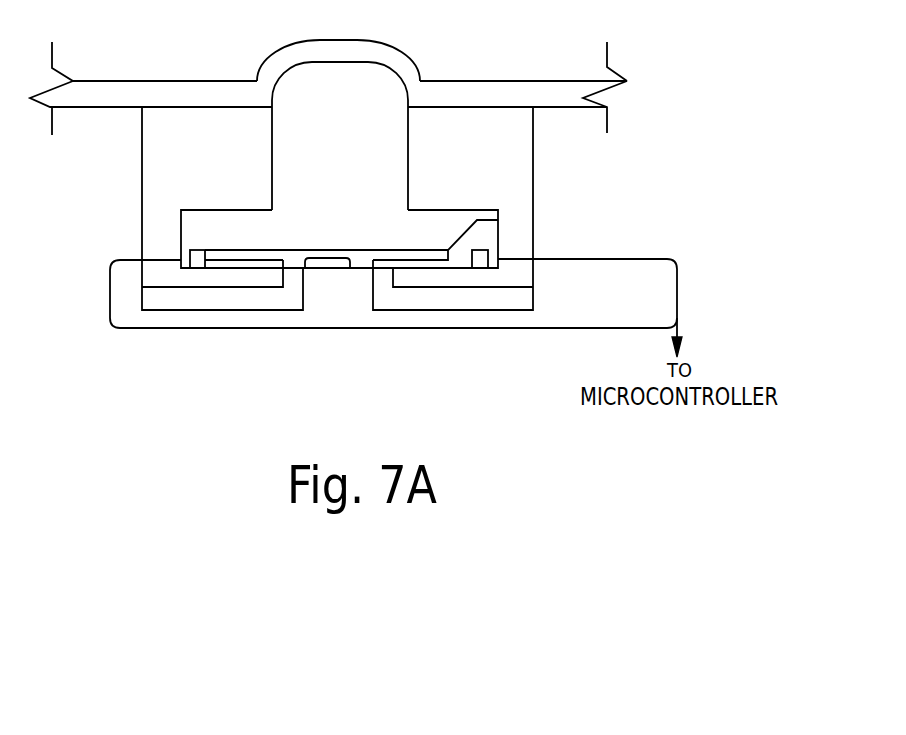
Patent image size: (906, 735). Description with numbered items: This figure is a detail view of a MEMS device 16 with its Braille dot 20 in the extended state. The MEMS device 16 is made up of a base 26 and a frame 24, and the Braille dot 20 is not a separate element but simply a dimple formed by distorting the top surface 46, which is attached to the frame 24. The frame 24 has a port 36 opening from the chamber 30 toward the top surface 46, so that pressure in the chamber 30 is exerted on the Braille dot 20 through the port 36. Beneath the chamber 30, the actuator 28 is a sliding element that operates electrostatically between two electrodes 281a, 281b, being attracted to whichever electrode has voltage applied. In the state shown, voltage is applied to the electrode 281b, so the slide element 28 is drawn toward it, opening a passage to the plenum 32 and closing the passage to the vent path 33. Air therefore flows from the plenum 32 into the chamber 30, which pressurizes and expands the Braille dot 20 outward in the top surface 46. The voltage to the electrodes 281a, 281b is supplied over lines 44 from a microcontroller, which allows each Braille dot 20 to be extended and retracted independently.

The MEMS device 16 is at (130, 322).
The Braille dot 20 is at (393, 42).
The frame 24 is at (142, 181).
The base 26 is at (142, 306).
The actuator 28 is at (498, 221).
The electrode 281a is at (488, 253).
The electrode 281b is at (190, 254).
The chamber 30 is at (453, 208).
The plenum 32 is at (462, 311).
The vent path 33 is at (227, 311).
The port 36 is at (409, 174).
The lines 44 is at (678, 320).
The top surface 46 is at (173, 81).